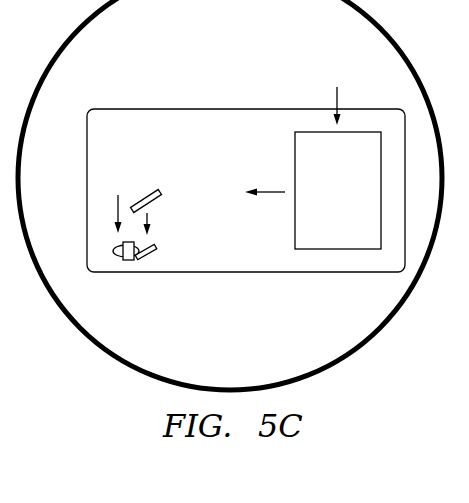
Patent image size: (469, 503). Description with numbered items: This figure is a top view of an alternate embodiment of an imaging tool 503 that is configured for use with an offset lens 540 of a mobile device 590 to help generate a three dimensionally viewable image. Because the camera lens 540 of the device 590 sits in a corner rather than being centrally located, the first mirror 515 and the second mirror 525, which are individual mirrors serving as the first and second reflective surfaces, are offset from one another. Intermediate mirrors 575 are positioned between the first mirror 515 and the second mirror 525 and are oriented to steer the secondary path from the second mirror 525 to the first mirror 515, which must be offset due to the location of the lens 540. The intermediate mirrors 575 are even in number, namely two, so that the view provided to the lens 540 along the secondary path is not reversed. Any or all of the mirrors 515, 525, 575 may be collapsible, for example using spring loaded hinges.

The imaging tool 503 is at (220, 127).
The mobile device 590 is at (207, 136).
The second mirror 525 is at (342, 238).
The lens 540 is at (117, 256).
The first mirror 515 is at (128, 261).
The intermediate mirrors 575 is at (152, 195).